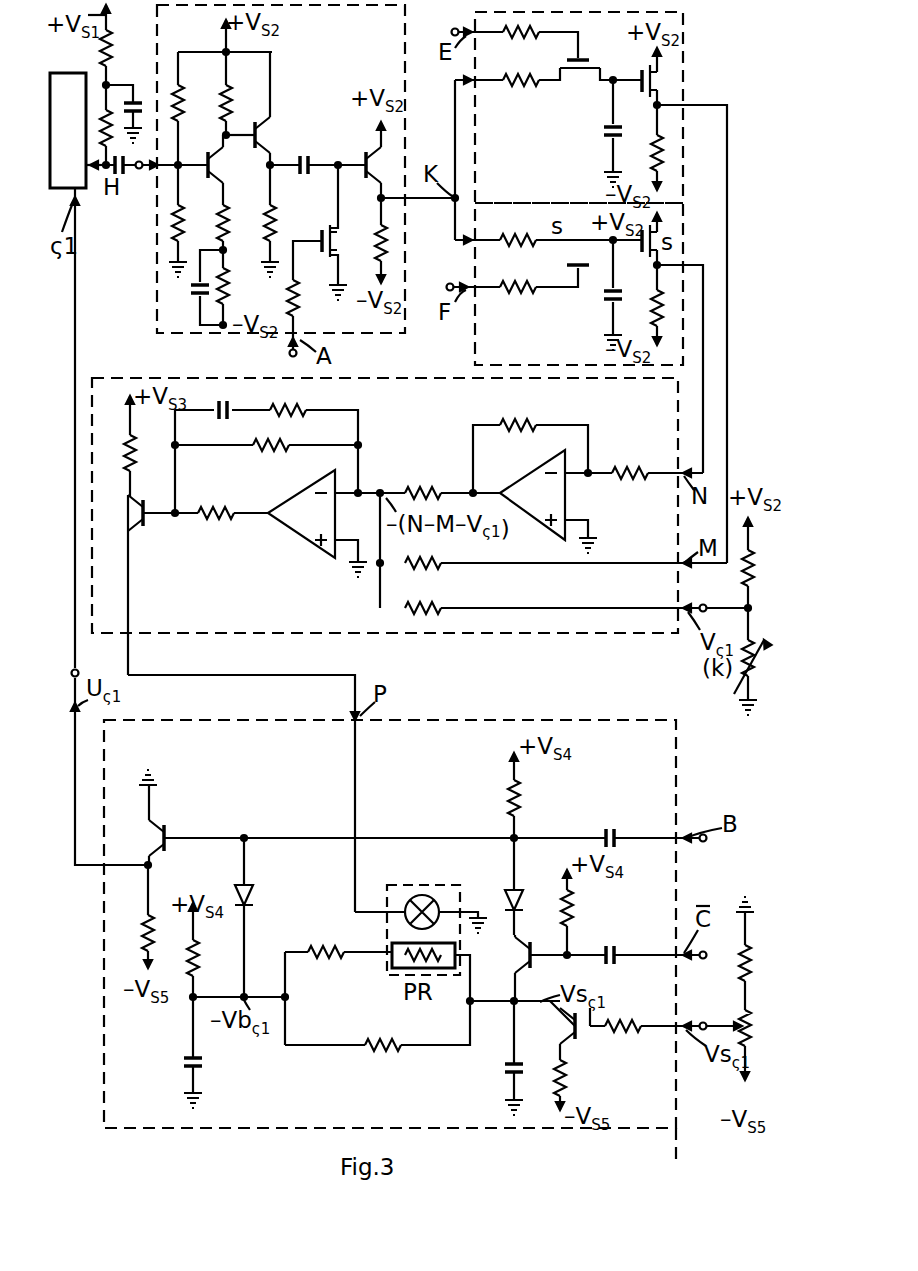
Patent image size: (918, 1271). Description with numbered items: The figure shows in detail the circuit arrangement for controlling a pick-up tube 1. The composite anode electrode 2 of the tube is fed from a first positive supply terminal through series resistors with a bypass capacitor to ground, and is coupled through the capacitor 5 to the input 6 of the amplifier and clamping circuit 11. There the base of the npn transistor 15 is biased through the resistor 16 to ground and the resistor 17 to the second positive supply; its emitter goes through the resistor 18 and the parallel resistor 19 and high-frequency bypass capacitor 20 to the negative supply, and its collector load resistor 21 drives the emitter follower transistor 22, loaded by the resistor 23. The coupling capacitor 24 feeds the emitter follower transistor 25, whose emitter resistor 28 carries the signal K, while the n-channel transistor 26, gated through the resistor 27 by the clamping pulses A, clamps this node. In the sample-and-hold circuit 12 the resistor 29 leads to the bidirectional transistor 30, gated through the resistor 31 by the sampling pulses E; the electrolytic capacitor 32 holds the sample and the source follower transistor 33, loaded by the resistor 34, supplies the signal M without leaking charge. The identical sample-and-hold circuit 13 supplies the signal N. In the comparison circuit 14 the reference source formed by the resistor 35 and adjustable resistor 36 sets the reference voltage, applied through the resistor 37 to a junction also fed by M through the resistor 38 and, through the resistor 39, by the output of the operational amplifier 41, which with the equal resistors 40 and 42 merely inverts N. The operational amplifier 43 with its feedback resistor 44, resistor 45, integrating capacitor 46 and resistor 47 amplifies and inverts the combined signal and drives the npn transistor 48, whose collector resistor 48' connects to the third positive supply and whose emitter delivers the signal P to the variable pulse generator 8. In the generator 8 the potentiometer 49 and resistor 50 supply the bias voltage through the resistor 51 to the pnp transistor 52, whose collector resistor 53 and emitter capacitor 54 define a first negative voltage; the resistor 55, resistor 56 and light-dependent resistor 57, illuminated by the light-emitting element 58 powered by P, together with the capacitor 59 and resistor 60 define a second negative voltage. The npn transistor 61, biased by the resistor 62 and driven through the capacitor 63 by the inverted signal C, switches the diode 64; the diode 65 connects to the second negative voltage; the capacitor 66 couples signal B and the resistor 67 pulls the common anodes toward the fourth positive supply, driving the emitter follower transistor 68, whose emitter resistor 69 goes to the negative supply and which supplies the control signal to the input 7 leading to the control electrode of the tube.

The pick-up tube 1 is at (60, 190).
The composite anode electrode g2,4 2 is at (90, 182).
The capacitor 5 is at (124, 170).
The input 6 is at (140, 161).
The input 7 is at (70, 671).
The variable pulse generator 8 is at (100, 945).
The amplifier and clamping circuit 11 is at (157, 292).
The sample-and-hold circuit 12 is at (685, 92).
The sample-and-hold circuit 13 is at (685, 248).
The comparison circuit 14 is at (506, 636).
The npn transistor 15 is at (223, 165).
The resistor 16 is at (184, 228).
The resistor 17 is at (183, 100).
The resistor 18 is at (229, 235).
The resistor 19 is at (227, 298).
The high-frequency bypass capacitor 20 is at (192, 288).
The resistor 21 is at (230, 100).
The npn transistor 22 is at (270, 135).
The resistor 23 is at (276, 232).
The coupling capacitor 24 is at (306, 156).
The npn transistor 25 is at (366, 160).
The transistor 26 is at (328, 236).
The resistor 27 is at (298, 296).
The resistor 28 is at (378, 240).
The resistor 29 is at (520, 86).
The transistor 30 is at (584, 75).
The resistor 31 is at (516, 38).
The electrolytic capacitor 32 is at (602, 132).
The transistor 33 is at (640, 80).
The resistor 34 is at (652, 145).
The resistor 35 is at (742, 572).
The adjustable resistor 36 is at (738, 684).
The resistor 37 is at (430, 607).
The resistor 38 is at (418, 570).
The resistor 39 is at (424, 488).
The resistor 40 is at (630, 478).
The operational amplifier 41 is at (112, 118).
The resistor 42 is at (112, 50).
The operational amplifier 43 is at (140, 108).
The resistor 44 is at (216, 520).
The resistor 45 is at (258, 450).
The capacitor 46 is at (218, 418).
The resistor 47 is at (296, 416).
The npn transistor 48 is at (118, 580).
The resistor 48' is at (114, 453).
The potentiometer 49 is at (740, 1026).
The resistor 50 is at (740, 964).
The resistor 51 is at (624, 1032).
The pnp transistor 52 is at (585, 1038).
The resistor 53 is at (557, 1074).
The electrolytic capacitor 54 is at (506, 1072).
The resistor 55 is at (386, 1050).
The resistor 56 is at (318, 960).
The light-dependent resistor 57 is at (394, 964).
The light-emitting element 58 is at (426, 894).
The electrolytic capacitor 59 is at (206, 1068).
The resistor 60 is at (200, 955).
The npn transistor 61 is at (533, 944).
The resistor 62 is at (574, 912).
The capacitor 63 is at (612, 945).
The diode 64 is at (508, 892).
The diode 65 is at (252, 893).
The capacitor 66 is at (614, 834).
The resistor 67 is at (524, 798).
The npn transistor 68 is at (158, 838).
The resistor 69 is at (143, 935).